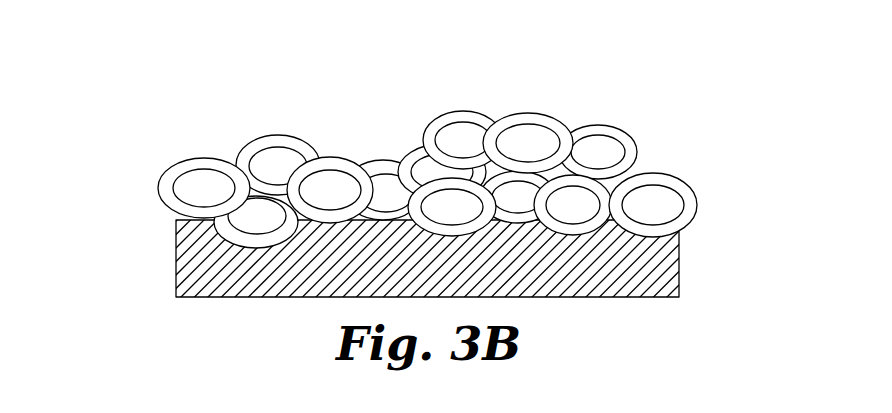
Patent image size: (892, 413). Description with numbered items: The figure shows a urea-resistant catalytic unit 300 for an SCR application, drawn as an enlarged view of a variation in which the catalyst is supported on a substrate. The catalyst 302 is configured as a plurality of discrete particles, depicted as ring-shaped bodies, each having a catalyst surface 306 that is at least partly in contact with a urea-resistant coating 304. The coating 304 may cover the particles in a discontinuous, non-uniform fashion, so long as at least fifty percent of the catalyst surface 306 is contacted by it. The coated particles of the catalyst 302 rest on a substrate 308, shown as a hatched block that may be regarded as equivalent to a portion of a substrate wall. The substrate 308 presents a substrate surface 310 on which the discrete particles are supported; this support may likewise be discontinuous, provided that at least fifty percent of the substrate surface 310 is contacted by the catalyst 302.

The urea-resistant catalytic unit 300 is at (138, 166).
The catalyst 302 is at (527, 140).
The urea-resistant coating 304 is at (543, 112).
The catalyst surface 306 is at (623, 137).
The substrate 308 is at (680, 263).
The substrate surface 310 is at (328, 229).